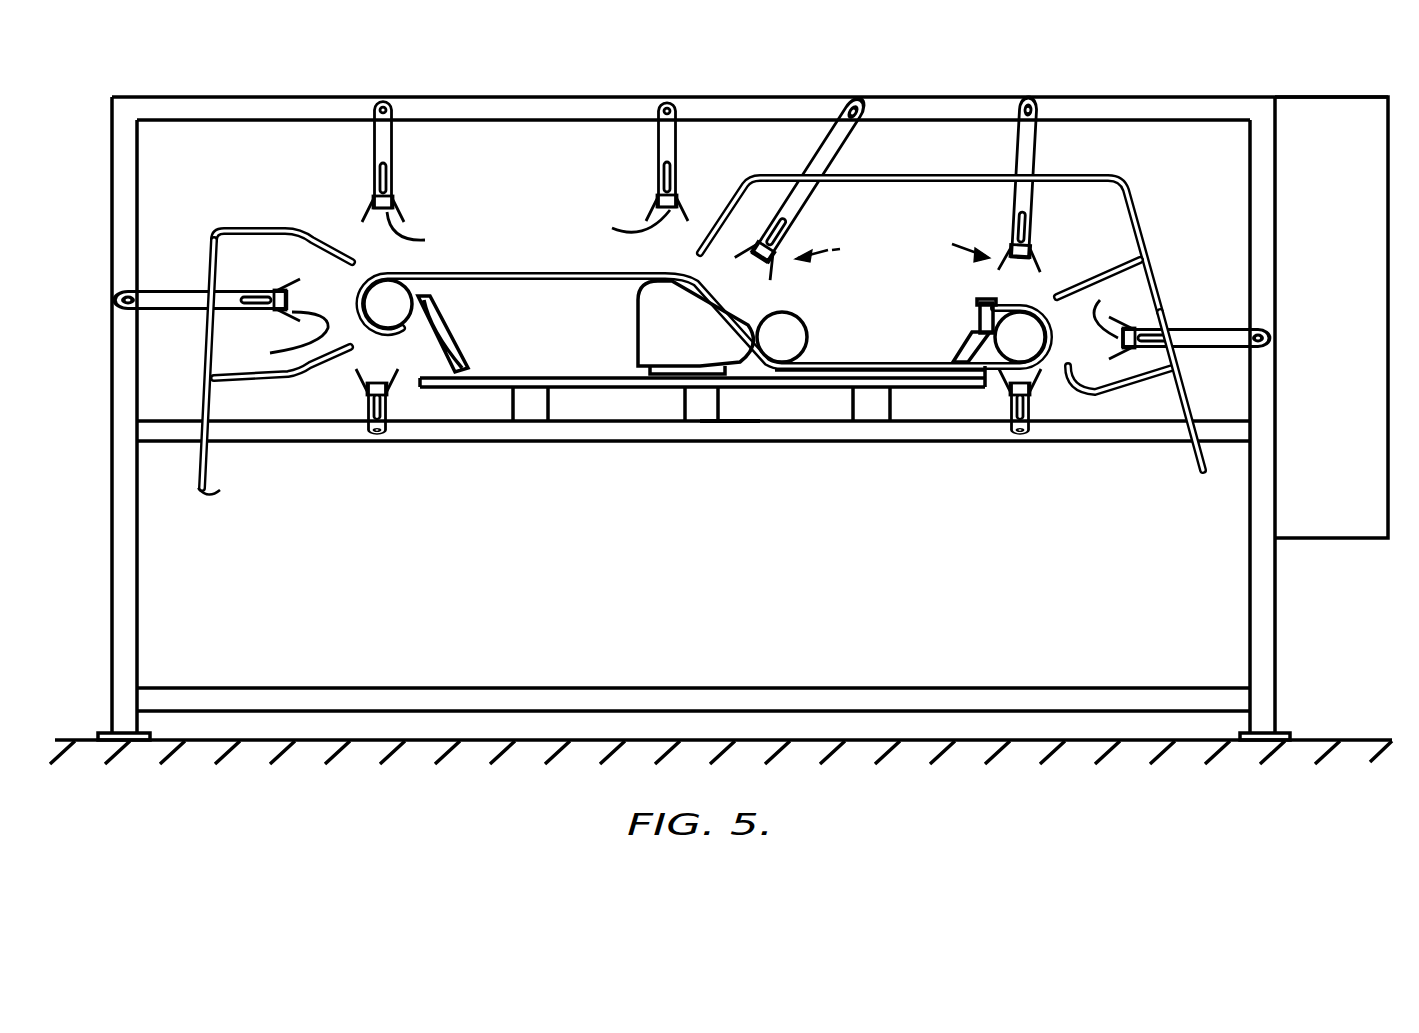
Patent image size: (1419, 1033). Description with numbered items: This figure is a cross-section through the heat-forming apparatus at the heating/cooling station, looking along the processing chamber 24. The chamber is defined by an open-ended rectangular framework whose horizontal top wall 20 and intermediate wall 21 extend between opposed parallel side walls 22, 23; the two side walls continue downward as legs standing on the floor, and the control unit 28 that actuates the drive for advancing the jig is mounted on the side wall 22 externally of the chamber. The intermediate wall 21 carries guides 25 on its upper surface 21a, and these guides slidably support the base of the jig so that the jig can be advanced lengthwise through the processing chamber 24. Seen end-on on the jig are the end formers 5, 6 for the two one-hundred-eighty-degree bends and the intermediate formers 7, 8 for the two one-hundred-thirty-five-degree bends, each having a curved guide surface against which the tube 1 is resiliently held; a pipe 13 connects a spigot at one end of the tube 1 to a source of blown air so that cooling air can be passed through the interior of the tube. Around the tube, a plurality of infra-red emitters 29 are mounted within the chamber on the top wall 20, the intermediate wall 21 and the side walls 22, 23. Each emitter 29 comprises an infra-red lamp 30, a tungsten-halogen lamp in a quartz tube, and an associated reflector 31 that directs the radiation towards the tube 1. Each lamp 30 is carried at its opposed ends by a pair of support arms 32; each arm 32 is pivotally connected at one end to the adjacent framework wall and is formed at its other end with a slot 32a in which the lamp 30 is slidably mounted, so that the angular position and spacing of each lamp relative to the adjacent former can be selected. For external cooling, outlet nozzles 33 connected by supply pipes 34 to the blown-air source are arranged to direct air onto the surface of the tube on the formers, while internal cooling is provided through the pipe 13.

The tube 1 is at (528, 274).
The end former 5 is at (405, 312).
The end former 6 is at (1005, 338).
The intermediate former 7 is at (775, 340).
The intermediate former 8 is at (650, 334).
The pipe 13 is at (438, 348).
The top wall 20 is at (778, 83).
The intermediate wall 21 is at (932, 442).
The upper surface 21a is at (757, 416).
The side wall 22 is at (112, 232).
The side wall 23 is at (1258, 592).
The processing chamber 24 is at (217, 145).
The guides 25 is at (522, 410).
The control unit 28 is at (1325, 110).
The infra-red emitter 29 is at (892, 233).
The infra-red lamp 30 is at (1168, 275).
The reflector 31 is at (300, 288).
The support arm 32 is at (376, 142).
The slot 32a is at (398, 155).
The outlet nozzle 33 is at (345, 250).
The supply pipe 34 is at (214, 492).